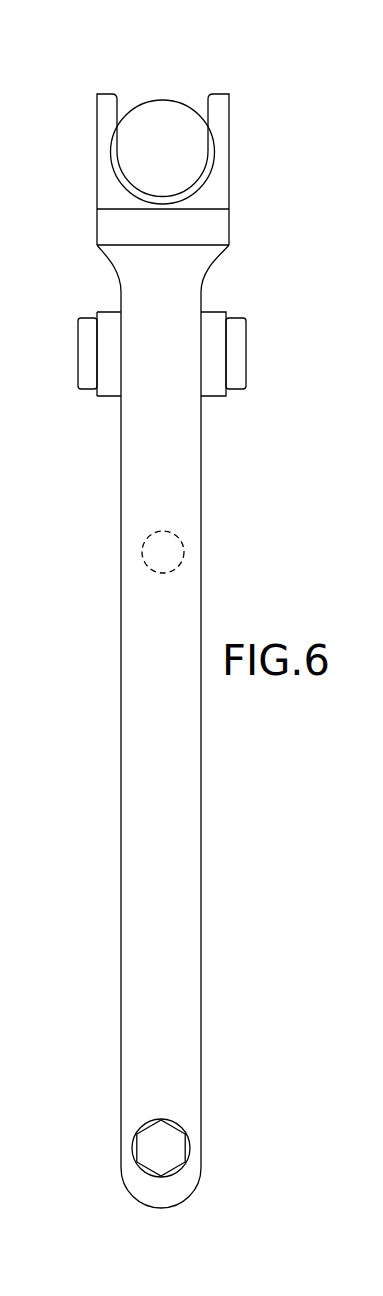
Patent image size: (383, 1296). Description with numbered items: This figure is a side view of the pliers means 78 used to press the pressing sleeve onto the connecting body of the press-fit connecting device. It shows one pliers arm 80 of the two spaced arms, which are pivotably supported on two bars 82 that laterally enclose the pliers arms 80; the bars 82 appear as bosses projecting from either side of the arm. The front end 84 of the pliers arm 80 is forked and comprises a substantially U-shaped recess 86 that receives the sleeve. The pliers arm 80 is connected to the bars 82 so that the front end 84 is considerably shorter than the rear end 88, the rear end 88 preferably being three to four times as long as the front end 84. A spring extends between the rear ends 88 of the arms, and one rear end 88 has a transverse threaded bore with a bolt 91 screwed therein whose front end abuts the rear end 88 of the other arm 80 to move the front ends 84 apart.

The pliers means 78 is at (164, 608).
The pliers arm 80 is at (111, 592).
The bar 82 is at (110, 386).
The front end 84 is at (120, 230).
The U-shaped recess 86 is at (145, 117).
The rear end 88 is at (143, 851).
The bolt 91 is at (173, 1155).